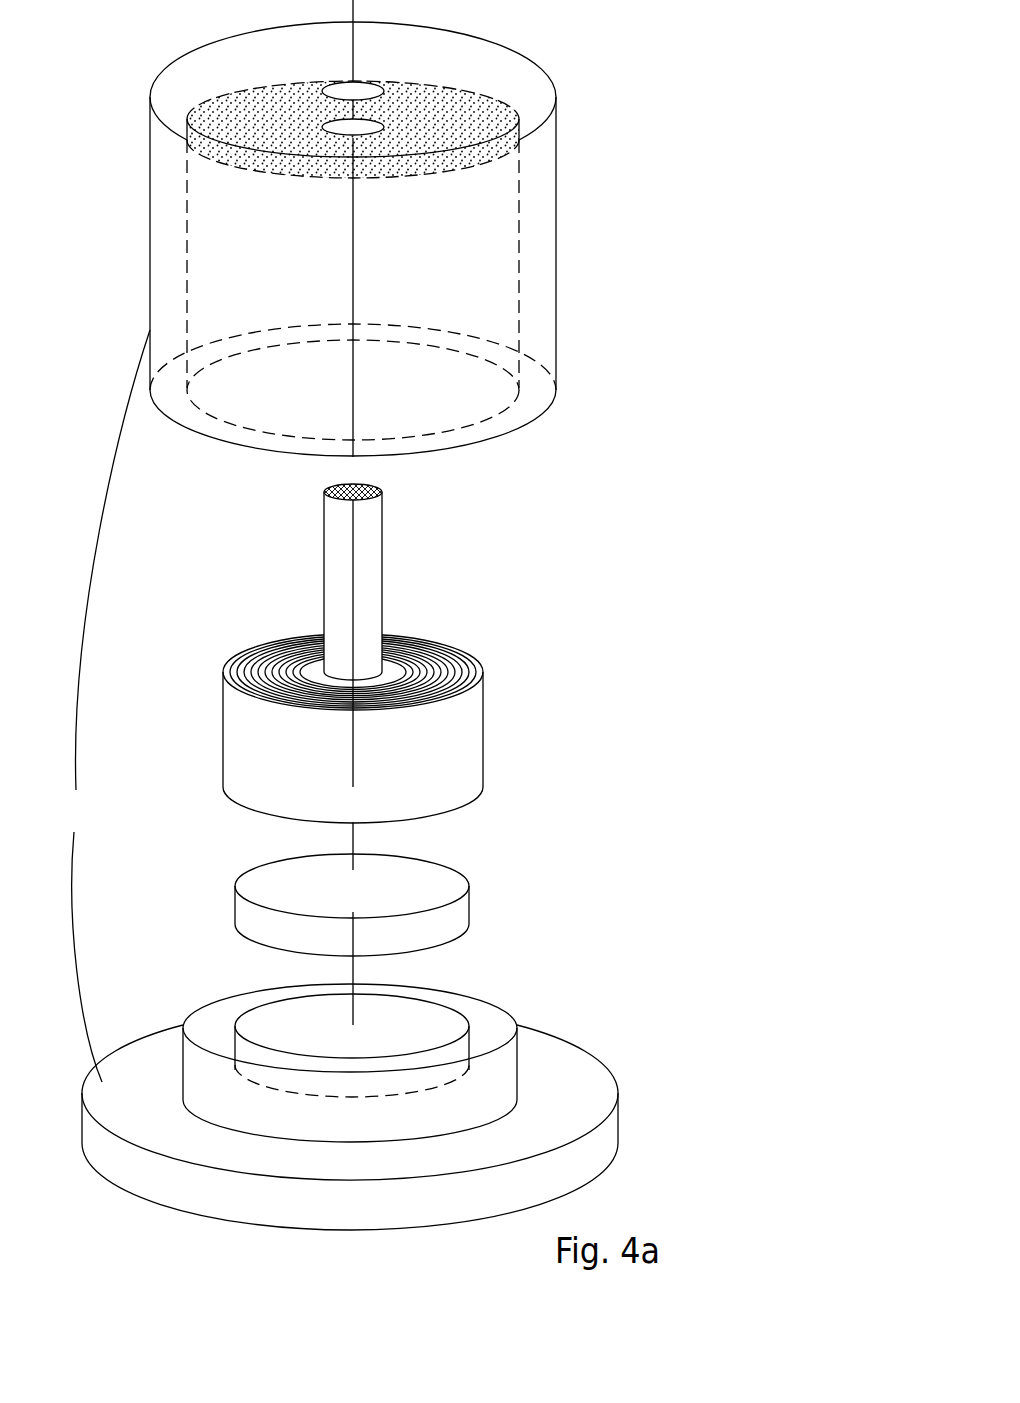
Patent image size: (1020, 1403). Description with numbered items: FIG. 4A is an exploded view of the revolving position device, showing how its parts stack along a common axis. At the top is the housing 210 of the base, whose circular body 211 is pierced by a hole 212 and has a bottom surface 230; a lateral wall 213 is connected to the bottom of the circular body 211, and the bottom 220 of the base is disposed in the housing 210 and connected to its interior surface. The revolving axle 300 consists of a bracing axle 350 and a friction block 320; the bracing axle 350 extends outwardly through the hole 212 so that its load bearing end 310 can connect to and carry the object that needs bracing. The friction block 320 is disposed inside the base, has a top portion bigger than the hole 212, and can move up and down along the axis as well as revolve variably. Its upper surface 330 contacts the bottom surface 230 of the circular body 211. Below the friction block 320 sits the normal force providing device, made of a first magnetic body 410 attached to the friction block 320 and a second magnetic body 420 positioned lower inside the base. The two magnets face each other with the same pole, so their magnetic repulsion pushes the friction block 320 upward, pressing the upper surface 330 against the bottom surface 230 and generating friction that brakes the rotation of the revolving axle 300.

The housing 210 is at (103, 706).
The circular body 211 is at (546, 82).
The hole 212 is at (366, 91).
The lateral wall 213 is at (557, 262).
The bottom 220 is at (507, 1070).
The bottom surface 230 is at (461, 100).
The revolving axle 300 is at (163, 547).
The load bearing end 310 is at (376, 488).
The friction block 320 is at (234, 739).
The upper surface 330 is at (453, 656).
The bracing axle 350 is at (345, 550).
The first magnetic body 410 is at (430, 880).
The second magnetic body 420 is at (433, 1022).